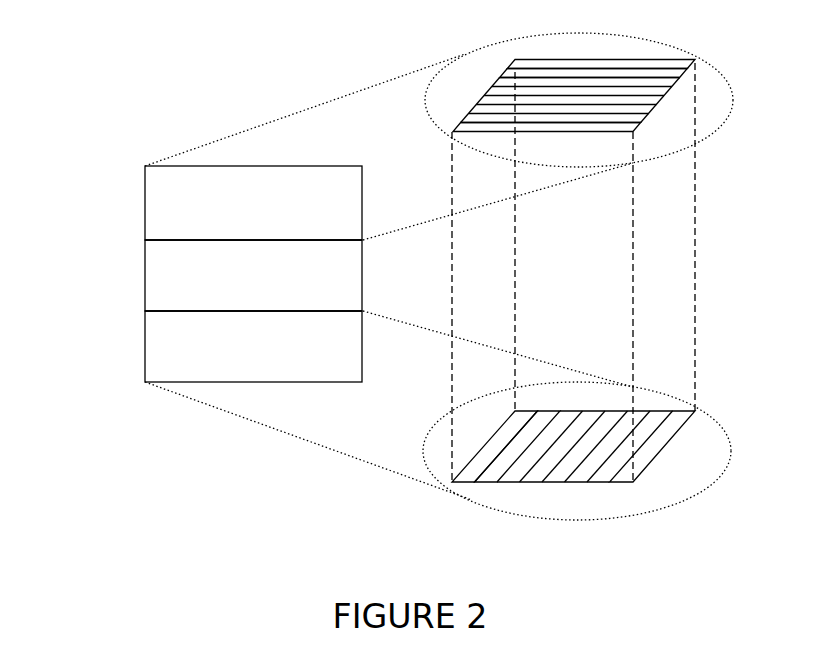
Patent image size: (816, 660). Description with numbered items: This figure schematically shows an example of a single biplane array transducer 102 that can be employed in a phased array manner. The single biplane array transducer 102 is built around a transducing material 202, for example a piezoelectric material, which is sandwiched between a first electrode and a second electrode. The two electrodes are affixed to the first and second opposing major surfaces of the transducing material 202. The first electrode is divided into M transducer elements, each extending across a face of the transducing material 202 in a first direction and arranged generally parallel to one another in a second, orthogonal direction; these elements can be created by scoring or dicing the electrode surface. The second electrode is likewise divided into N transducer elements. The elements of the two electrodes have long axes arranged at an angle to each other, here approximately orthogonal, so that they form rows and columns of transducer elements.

The single biplane array transducer 102 is at (104, 89).
The transducing material 202 is at (145, 273).